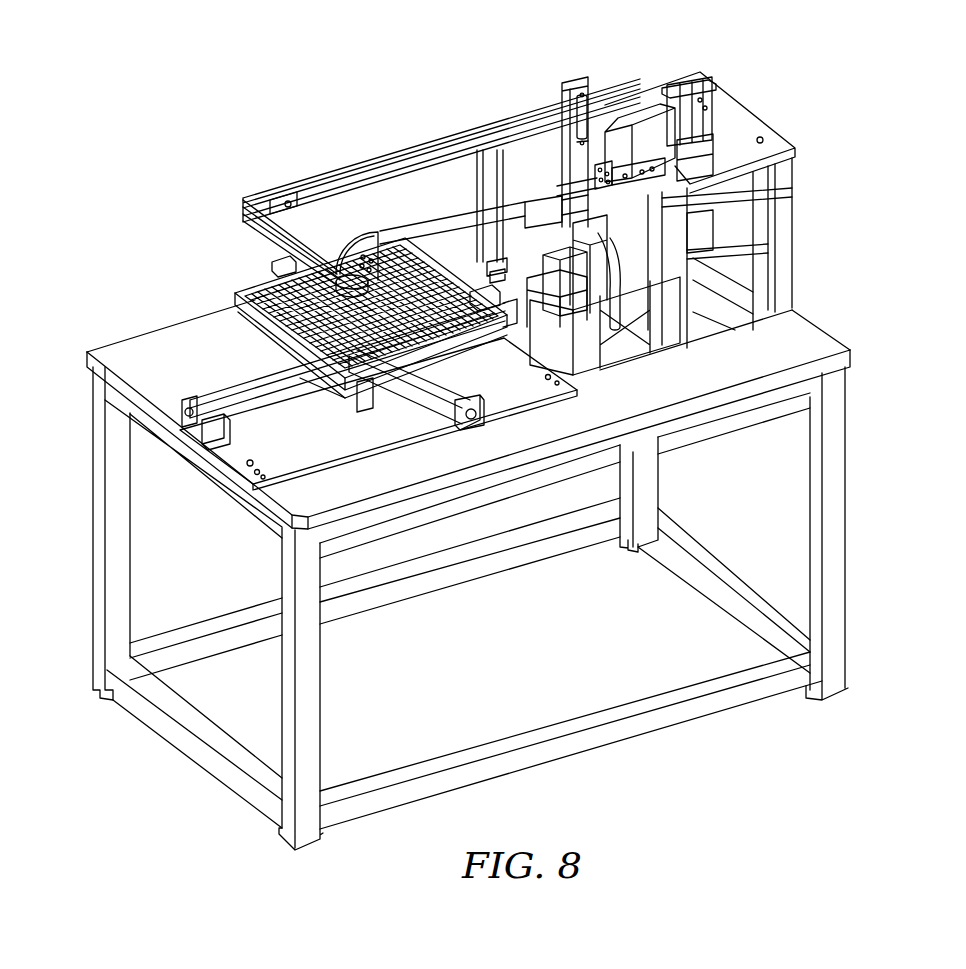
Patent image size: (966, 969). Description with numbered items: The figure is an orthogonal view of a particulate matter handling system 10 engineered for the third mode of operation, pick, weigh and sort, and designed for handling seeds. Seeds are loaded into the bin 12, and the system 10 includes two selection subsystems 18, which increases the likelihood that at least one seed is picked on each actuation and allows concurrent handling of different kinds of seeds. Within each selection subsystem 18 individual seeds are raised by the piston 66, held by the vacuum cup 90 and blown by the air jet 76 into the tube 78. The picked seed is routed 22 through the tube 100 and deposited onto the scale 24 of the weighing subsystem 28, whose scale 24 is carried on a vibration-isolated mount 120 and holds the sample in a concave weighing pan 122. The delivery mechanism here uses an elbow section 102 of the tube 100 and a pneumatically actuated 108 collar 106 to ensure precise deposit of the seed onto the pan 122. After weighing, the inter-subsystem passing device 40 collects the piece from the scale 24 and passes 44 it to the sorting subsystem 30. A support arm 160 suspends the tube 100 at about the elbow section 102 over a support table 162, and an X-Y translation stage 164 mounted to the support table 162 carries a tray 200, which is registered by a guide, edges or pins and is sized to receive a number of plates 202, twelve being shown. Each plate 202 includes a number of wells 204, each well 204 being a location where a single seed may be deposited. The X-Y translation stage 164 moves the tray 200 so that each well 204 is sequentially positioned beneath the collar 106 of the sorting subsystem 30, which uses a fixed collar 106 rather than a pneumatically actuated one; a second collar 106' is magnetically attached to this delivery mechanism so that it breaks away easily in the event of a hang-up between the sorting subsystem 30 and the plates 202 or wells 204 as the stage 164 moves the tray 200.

The particulate matter handling system 10 is at (873, 238).
The bin 12 is at (740, 170).
The selection subsystem 18 is at (756, 94).
The route 22 is at (648, 110).
The scale 24 is at (556, 231).
The weighing subsystem 28 is at (558, 190).
The sorting subsystem 30 is at (233, 250).
The inter-subsystem passing device 40 is at (515, 268).
The pass 44 is at (530, 210).
The piston 66 is at (770, 150).
The air jet 76 is at (712, 128).
The tube 78 is at (737, 191).
The vacuum cup 90 is at (710, 118).
The tube 100 is at (400, 234).
The elbow section 102 is at (362, 241).
The collar 106 is at (446, 231).
The second collar 106' is at (322, 411).
The pneumatic actuation 108 is at (563, 105).
The vibration-isolated mount 120 is at (592, 374).
The weighing pan 122 is at (697, 232).
The support arm 160 is at (247, 196).
The support table 162 is at (543, 390).
The X-Y translation stage 164 is at (212, 381).
The tray 200 is at (284, 335).
The plate 202 is at (306, 350).
The well 204 is at (233, 293).